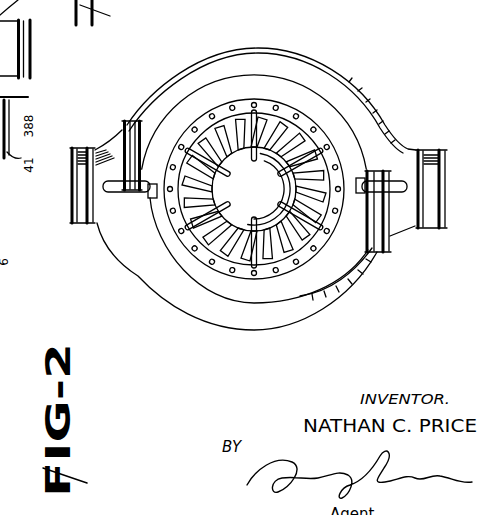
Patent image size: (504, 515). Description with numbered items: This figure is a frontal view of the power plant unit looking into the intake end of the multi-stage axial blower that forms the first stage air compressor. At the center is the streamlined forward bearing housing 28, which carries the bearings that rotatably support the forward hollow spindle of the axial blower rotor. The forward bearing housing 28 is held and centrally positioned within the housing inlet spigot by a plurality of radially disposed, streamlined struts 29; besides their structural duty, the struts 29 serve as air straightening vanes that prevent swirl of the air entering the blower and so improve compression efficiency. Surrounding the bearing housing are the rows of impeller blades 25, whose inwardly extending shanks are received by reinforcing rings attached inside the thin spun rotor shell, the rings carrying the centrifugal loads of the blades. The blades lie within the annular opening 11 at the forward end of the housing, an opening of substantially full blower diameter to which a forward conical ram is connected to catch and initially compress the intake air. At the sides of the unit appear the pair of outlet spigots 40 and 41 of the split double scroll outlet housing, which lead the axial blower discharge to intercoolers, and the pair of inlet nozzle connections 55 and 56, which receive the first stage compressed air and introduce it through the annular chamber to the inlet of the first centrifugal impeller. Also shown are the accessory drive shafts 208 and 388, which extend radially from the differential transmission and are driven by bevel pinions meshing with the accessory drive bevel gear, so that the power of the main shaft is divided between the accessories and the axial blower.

The annular opening 11 is at (288, 248).
The impeller blades 25 is at (235, 122).
The forward bearing housing 28 is at (258, 197).
The struts 29 is at (197, 148).
The outlet spigot 40 is at (122, 134).
The outlet spigot 41 is at (392, 249).
The inlet nozzle connection 55 is at (70, 197).
The inlet nozzle connection 56 is at (447, 172).
The accessory drive shaft 208 is at (127, 191).
The accessory drive shaft 388 is at (386, 183).